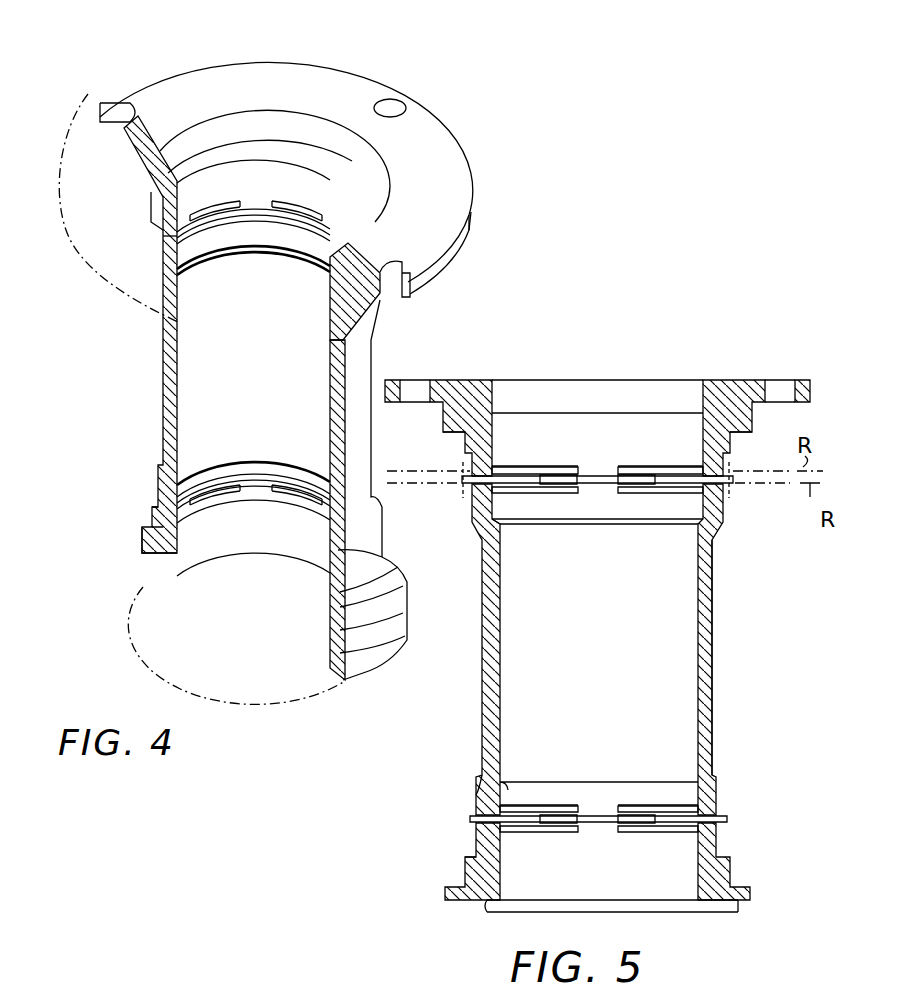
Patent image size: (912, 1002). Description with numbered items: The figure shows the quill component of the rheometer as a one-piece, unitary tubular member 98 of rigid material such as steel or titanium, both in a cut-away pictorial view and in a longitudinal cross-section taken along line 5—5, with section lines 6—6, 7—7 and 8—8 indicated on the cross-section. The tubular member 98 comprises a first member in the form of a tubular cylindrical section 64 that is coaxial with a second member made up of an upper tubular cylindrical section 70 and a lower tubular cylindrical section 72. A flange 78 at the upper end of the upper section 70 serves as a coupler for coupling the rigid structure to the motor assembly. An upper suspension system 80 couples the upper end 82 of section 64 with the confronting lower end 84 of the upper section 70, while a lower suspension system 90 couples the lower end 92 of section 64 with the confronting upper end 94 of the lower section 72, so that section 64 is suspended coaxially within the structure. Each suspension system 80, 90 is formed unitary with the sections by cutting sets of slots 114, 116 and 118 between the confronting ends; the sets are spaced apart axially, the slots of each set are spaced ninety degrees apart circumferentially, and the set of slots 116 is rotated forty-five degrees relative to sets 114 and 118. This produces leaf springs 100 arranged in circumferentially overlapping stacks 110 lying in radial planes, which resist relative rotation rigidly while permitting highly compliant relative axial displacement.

In FIG. 4, the section line 5— 5 is at (92, 100).
In FIG. 5, the section line 6— 6 is at (437, 465).
In FIG. 5, the section line 7— 7 is at (430, 488).
In FIG. 5, the section line 8— 8 is at (452, 497).
In FIG. 4, the tubular cylindrical section 64 is at (163, 400).
In FIG. 5, the tubular cylindrical section 64 is at (482, 700).
In FIG. 4, the upper tubular cylindrical section 70 is at (150, 187).
In FIG. 5, the upper tubular cylindrical section 70 is at (490, 380).
In FIG. 4, the lower tubular cylindrical section 72 is at (150, 540).
In FIG. 5, the lower tubular cylindrical section 72 is at (448, 872).
In FIG. 4, the flange 78 is at (430, 120).
In FIG. 5, the flange 78 is at (752, 380).
In FIG. 4, the upper suspension system 80 is at (158, 240).
In FIG. 5, the upper suspension system 80 is at (722, 510).
In FIG. 4, the upper end 82 is at (205, 258).
In FIG. 5, the upper end 82 is at (506, 520).
In FIG. 4, the lower end 84 is at (158, 205).
In FIG. 5, the lower end 84 is at (445, 450).
In FIG. 4, the lower suspension system 90 is at (158, 489).
In FIG. 5, the lower suspension system 90 is at (478, 812).
In FIG. 4, the lower end 92 is at (200, 470).
In FIG. 5, the lower end 92 is at (507, 790).
In FIG. 4, the upper end 94 is at (156, 505).
In FIG. 5, the upper end 94 is at (470, 850).
In FIG. 4, the tubular member 98 is at (471, 204).
In FIG. 5, the tubular member 98 is at (716, 720).
In FIG. 4, the leaf springs 100 is at (224, 202).
In FIG. 5, the leaf springs 100 is at (563, 467).
In FIG. 5, the stacks 110 is at (556, 494).
In FIG. 4, the set of slots 114 is at (255, 209).
In FIG. 5, the set of slots 114 is at (530, 466).
In FIG. 4, the set of slots 116 is at (330, 215).
In FIG. 5, the set of slots 116 is at (598, 476).
In FIG. 4, the set of slots 118 is at (272, 242).
In FIG. 5, the set of slots 118 is at (515, 494).